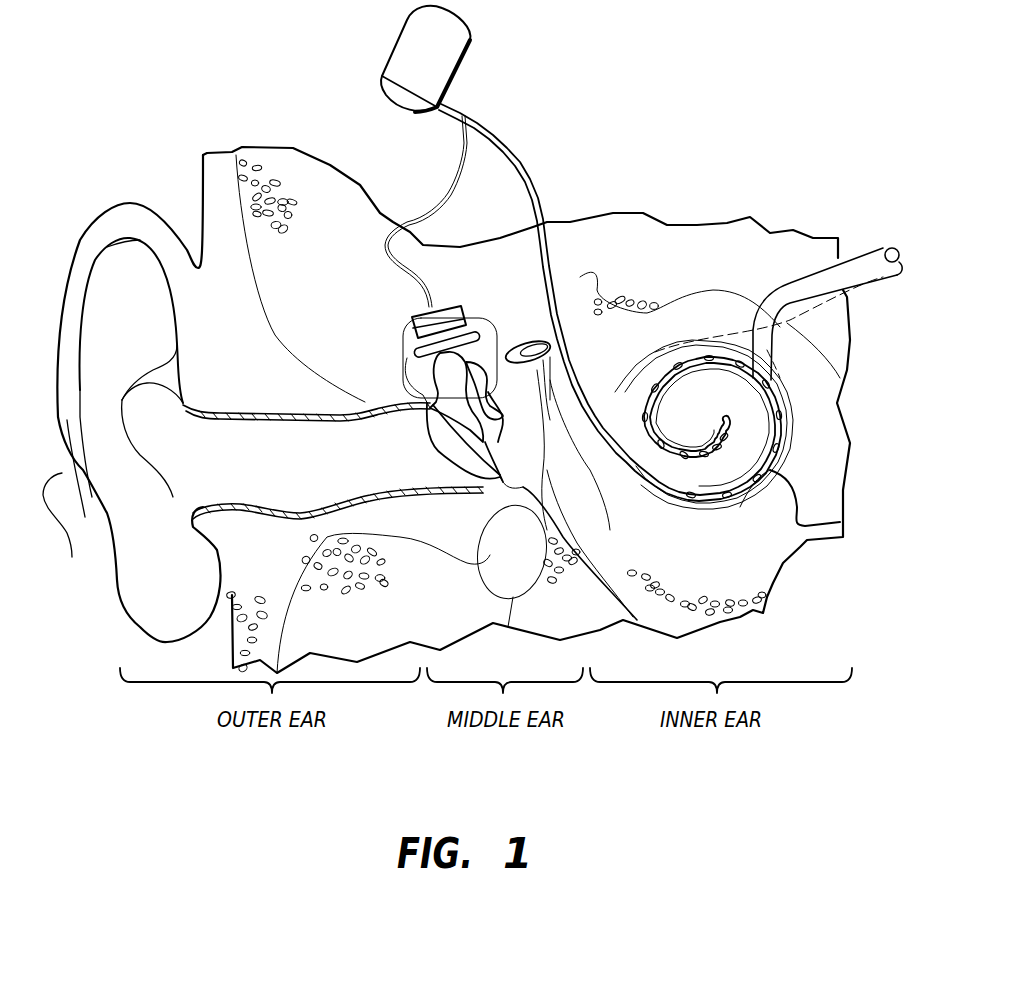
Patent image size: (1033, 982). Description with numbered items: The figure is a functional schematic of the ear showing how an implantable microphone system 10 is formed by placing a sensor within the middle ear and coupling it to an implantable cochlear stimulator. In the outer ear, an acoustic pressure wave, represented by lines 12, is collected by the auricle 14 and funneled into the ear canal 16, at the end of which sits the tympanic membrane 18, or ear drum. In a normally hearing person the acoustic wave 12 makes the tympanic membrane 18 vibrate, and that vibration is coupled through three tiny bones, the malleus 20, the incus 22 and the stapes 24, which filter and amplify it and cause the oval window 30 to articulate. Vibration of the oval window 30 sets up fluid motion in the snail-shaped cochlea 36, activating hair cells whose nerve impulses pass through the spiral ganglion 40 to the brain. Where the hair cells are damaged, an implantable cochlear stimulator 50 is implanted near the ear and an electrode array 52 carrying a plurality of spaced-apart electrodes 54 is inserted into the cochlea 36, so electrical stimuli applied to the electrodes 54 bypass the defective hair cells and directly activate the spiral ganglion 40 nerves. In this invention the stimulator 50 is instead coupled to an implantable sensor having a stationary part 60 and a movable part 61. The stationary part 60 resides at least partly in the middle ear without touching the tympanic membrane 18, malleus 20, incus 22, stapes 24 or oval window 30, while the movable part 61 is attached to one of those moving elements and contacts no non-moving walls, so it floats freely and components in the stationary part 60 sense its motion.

The implantable microphone system 10 is at (345, 137).
The acoustic pressure wave 12 is at (123, 372).
The auricle 14 is at (137, 610).
The ear canal 16 is at (320, 472).
The tympanic membrane 18 is at (430, 440).
The malleus 20 is at (498, 442).
The incus 22 is at (526, 420).
The stapes 24 is at (503, 403).
The oval window 30 is at (537, 345).
The cochlea 36 is at (840, 522).
The spiral ganglion 40 is at (880, 247).
The implantable cochlear stimulator 50 is at (447, 63).
The electrode array 52 is at (668, 500).
The electrodes 54 is at (678, 362).
The stationary part 60 is at (412, 325).
The movable part 61 is at (415, 360).